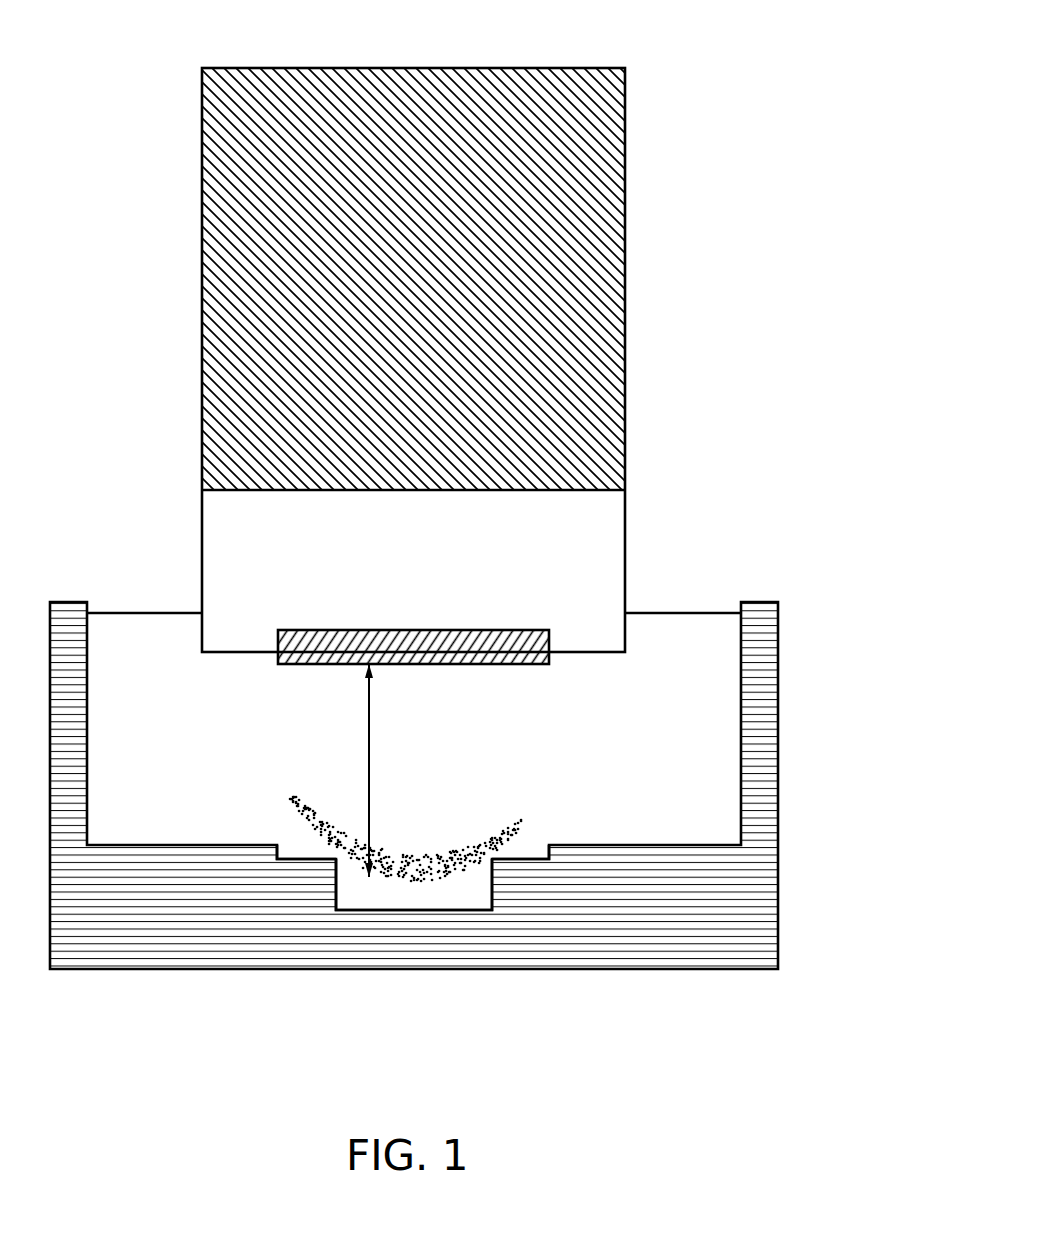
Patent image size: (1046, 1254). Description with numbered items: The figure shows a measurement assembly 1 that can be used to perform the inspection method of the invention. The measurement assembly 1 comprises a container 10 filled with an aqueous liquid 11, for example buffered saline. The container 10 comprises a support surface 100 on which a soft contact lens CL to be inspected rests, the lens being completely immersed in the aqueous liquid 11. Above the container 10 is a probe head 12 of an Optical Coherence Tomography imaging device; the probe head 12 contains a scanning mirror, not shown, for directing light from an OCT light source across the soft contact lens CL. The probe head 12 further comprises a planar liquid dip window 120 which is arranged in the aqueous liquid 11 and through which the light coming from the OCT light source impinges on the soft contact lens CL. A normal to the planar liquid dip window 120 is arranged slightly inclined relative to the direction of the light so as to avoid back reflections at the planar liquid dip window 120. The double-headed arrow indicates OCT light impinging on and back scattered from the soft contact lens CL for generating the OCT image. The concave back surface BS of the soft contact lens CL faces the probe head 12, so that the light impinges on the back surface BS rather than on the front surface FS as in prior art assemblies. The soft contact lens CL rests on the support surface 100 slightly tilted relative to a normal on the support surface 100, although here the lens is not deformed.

The measurement assembly 1 is at (752, 62).
The container 10 is at (779, 720).
The aqueous liquid 11 is at (672, 655).
The probe head 12 is at (644, 370).
The support surface 100 is at (297, 858).
The planar liquid dip window 120 is at (465, 628).
The back surface BS is at (460, 850).
The front surface FS is at (383, 876).
The soft contact lens CL is at (440, 873).